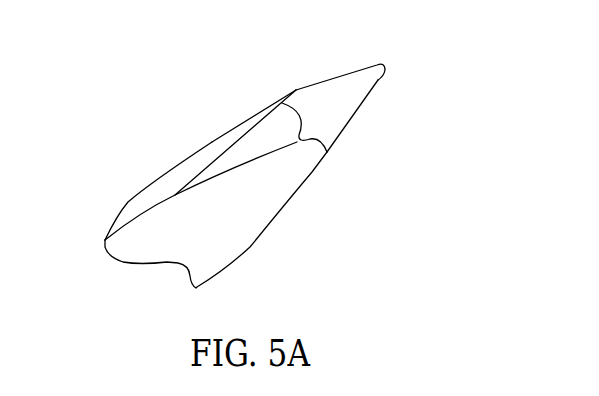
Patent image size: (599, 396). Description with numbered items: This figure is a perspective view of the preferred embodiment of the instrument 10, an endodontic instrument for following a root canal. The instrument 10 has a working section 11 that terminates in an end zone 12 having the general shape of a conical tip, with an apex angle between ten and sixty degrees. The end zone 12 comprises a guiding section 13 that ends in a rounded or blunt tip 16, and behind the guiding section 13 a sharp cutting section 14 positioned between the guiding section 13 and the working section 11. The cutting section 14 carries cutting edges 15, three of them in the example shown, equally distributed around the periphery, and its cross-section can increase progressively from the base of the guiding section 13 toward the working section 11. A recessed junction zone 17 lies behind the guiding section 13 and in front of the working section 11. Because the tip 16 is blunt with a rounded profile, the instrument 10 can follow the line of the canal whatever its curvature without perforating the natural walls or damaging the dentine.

The instrument 10 is at (138, 130).
The working section 11 is at (133, 205).
The end zone 12 is at (295, 197).
The guiding section 13 is at (379, 82).
The cutting section 14 is at (271, 93).
The cutting edge 15 is at (219, 150).
The tip 16 is at (380, 66).
The recessed junction zone 17 is at (283, 131).